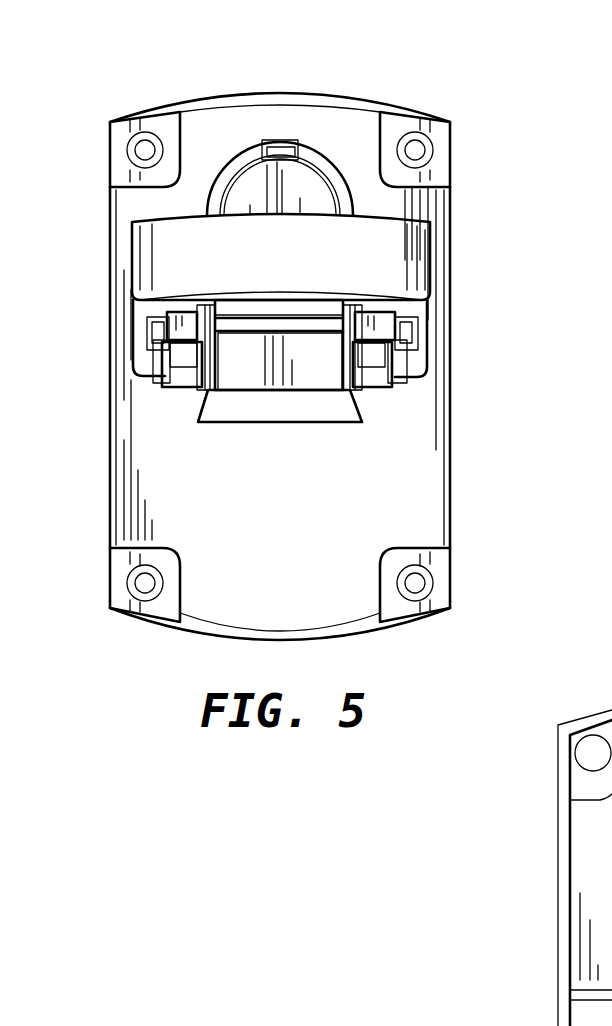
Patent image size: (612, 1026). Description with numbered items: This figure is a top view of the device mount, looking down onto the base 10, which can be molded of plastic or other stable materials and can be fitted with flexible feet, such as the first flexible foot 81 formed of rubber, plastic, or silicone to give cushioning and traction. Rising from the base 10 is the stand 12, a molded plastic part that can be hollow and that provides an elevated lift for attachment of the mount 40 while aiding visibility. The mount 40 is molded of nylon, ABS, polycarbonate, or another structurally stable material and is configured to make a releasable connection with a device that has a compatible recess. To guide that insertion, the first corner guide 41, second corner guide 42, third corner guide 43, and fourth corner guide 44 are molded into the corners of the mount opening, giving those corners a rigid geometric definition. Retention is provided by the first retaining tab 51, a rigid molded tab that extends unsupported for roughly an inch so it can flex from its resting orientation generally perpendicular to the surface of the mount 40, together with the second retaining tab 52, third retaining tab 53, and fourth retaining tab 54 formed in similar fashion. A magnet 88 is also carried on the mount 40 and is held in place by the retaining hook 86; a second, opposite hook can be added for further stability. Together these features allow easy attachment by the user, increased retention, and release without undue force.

The base 10 is at (400, 497).
The stand 12 is at (250, 400).
The mount 40 is at (370, 253).
The first corner guide 41 is at (378, 328).
The second corner guide 42 is at (372, 370).
The third corner guide 43 is at (188, 370).
The fourth corner guide 44 is at (185, 322).
The first retaining tab 51 is at (295, 325).
The second retaining tab 52 is at (395, 362).
The third retaining tab 53 is at (305, 370).
The fourth retaining tab 54 is at (167, 360).
The first flexible foot 81 is at (593, 750).
The retaining hook 86 is at (280, 147).
The magnet 88 is at (303, 193).